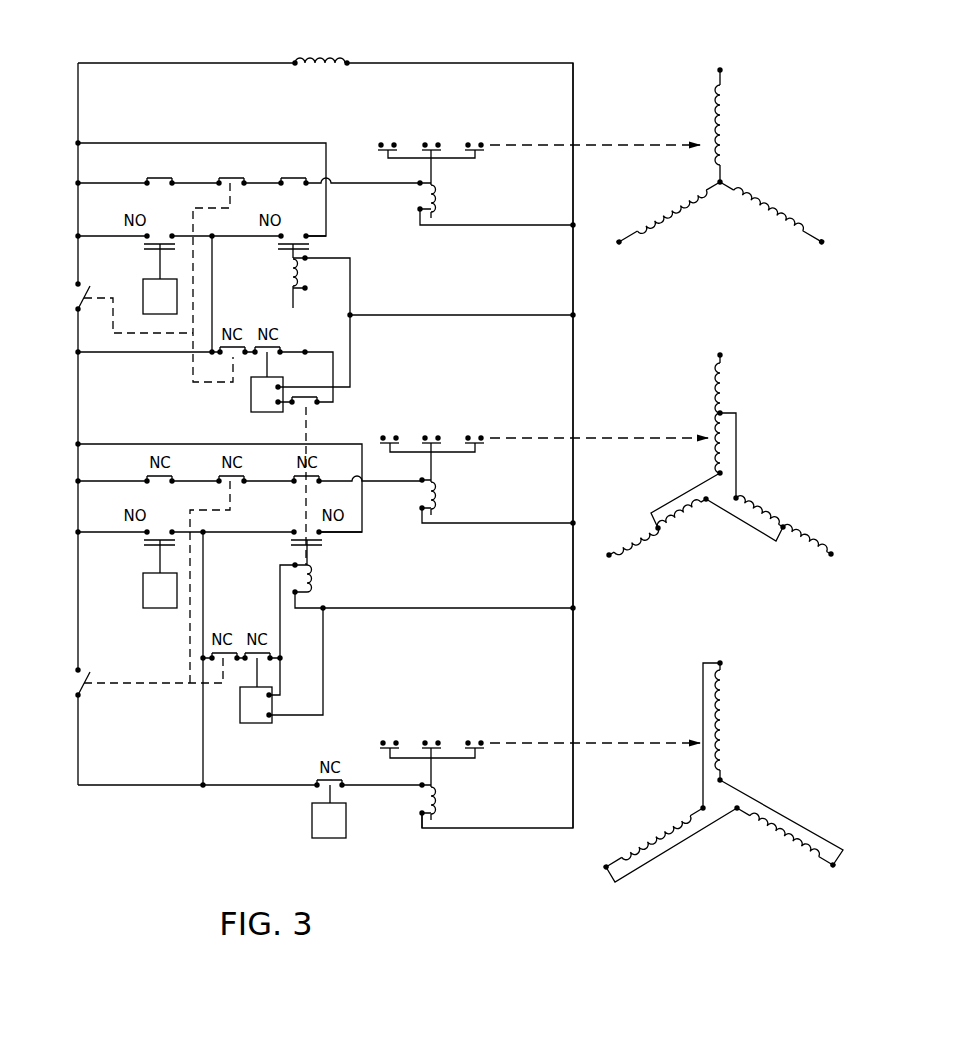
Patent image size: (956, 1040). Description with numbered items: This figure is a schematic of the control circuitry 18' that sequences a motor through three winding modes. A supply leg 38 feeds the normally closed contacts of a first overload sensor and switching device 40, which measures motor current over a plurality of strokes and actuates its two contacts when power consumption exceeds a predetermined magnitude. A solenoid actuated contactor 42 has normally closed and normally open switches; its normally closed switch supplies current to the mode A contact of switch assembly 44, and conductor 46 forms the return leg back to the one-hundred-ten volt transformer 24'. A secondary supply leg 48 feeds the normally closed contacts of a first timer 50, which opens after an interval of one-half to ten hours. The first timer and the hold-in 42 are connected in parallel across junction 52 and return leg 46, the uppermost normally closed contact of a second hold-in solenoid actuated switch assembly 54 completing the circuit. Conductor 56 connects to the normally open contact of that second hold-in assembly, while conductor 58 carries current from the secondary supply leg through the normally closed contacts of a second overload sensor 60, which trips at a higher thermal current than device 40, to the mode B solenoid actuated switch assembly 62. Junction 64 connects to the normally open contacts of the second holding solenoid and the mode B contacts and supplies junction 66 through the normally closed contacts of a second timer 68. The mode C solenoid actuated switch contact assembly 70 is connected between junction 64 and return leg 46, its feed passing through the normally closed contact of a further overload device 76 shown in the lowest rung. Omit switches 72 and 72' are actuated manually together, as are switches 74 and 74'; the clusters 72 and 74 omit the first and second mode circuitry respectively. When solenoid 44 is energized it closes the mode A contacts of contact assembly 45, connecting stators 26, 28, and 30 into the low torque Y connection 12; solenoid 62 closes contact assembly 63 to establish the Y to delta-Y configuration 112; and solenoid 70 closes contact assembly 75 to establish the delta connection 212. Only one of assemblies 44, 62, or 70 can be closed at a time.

The Y connections 12 is at (717, 163).
The circuitry 18' is at (286, 118).
The 110 volt transformer 24' is at (307, 69).
The stator 26 is at (660, 200).
The stator 28 is at (704, 100).
The stator 30 is at (778, 200).
The supply leg 38 is at (78, 183).
The first overload sensor and switching device 40 is at (143, 293).
The solenoid actuated contactor 42 is at (282, 265).
The switch assembly 44 is at (441, 195).
The contact assembly 45 is at (473, 112).
The conductor 46 is at (573, 292).
The secondary supply leg 48 is at (213, 300).
The first timer 50 is at (251, 398).
The junction 52 is at (308, 350).
The second hold-in solenoid actuated switch assembly 54 is at (315, 577).
The conductor 56 is at (120, 444).
The conductor 58 is at (277, 480).
The second overload sensor 60 is at (143, 590).
The second solenoid actuated switch assembly 62 is at (446, 497).
The contact assembly 63 is at (478, 395).
The junction 64 is at (205, 530).
The junction 66 is at (281, 657).
The second timer 68 is at (253, 723).
The third solenoid actuated switch contact assembly 70 is at (448, 800).
The omit switch 72 is at (115, 294).
The omit switch 72' is at (238, 264).
The switch 74 is at (59, 662).
The switch 74' is at (165, 567).
The contact assembly 75 is at (469, 710).
The overload relay 76 is at (312, 820).
The Y to delta-Y configuration 112 is at (768, 422).
The delta connection 212 is at (751, 752).